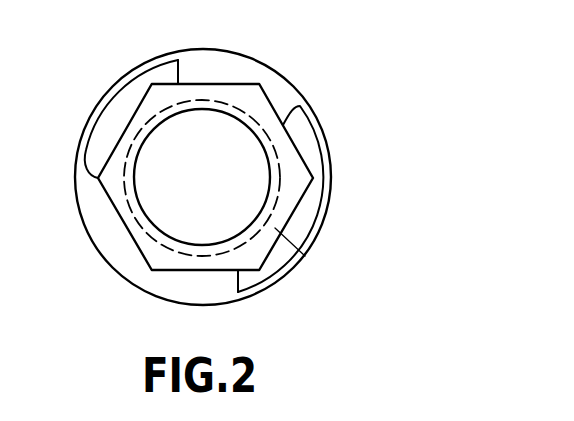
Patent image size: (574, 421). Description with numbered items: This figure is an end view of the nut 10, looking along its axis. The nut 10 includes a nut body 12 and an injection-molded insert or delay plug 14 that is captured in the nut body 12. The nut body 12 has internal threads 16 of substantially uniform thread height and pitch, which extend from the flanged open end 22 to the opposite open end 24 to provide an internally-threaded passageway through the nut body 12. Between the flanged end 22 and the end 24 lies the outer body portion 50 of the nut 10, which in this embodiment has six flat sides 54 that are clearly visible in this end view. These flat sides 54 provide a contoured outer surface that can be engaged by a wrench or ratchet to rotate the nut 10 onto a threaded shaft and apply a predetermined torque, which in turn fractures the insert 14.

The nut 10 is at (231, 176).
The nut body 12 is at (210, 162).
The insert or delay plug 14 is at (213, 138).
The internal threads 16 is at (304, 249).
The flanged open end 22 is at (325, 227).
The opposite open end 24 is at (120, 225).
The outer body portion 50 is at (328, 162).
The flat sides 54 is at (178, 60).